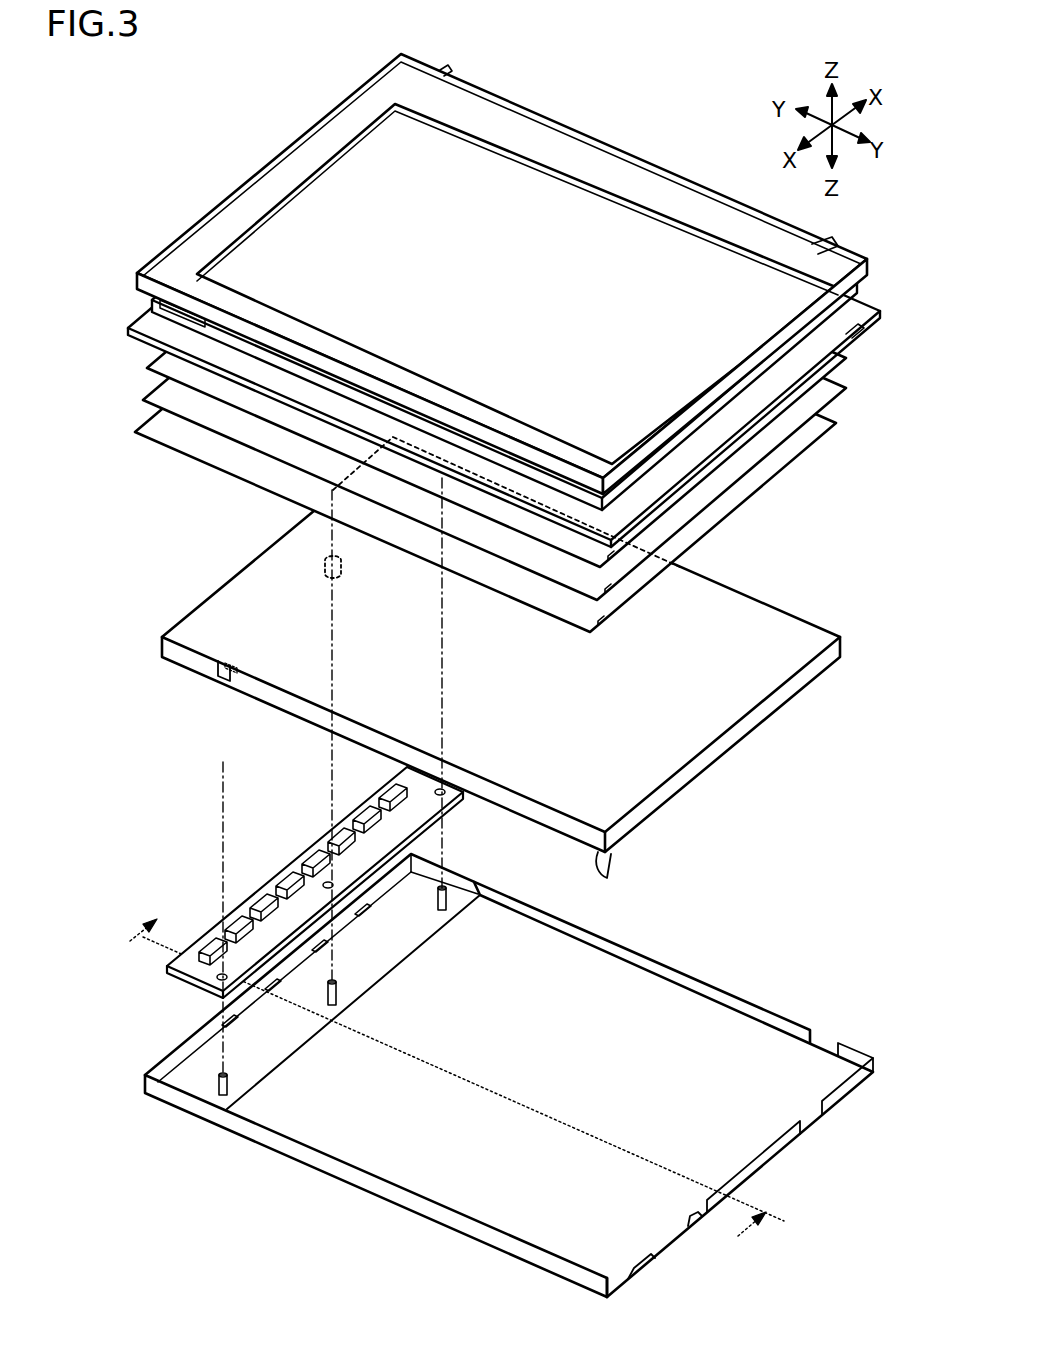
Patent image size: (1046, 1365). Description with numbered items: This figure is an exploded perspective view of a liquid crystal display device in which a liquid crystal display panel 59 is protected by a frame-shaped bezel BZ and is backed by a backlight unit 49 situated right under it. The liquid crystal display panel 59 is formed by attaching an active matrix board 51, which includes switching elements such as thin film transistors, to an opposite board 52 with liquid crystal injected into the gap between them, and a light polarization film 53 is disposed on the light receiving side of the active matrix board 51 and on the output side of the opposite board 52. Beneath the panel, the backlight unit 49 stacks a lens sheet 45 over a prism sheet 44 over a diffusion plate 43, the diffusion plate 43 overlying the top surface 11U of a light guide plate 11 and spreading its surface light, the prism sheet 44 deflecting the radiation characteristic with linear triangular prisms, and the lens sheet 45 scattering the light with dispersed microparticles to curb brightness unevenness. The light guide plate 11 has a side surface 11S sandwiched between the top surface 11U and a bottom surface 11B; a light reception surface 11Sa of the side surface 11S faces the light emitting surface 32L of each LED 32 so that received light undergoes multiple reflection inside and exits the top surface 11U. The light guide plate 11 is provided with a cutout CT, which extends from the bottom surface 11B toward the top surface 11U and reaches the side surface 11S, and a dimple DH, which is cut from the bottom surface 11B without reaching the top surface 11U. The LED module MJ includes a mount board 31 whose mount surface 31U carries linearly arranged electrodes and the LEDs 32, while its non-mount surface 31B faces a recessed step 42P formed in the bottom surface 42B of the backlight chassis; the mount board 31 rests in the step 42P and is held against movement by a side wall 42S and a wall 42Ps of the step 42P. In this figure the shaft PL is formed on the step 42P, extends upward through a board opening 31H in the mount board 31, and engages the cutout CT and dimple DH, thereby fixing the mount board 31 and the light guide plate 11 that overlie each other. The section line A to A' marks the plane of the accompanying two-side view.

The bezel BZ is at (136, 273).
The liquid crystal display panel 59 is at (460, 315).
The opposite board 52 is at (150, 300).
The active matrix board 51 is at (152, 311).
The light polarization film 53 is at (142, 341).
The lens sheet 45 is at (496, 363).
The prism sheet 44 is at (494, 394).
The diffusion plate 43 is at (485, 427).
The light guide plate 11 is at (476, 672).
The light reception surface 11Sa is at (176, 626).
The top surface 11U is at (512, 656).
The side surface 11S is at (804, 620).
The bottom surface 11B is at (783, 720).
The cutout CT is at (440, 474).
The dimple DH is at (253, 558).
The backlight unit 49 is at (92, 272).
The LED module MJ is at (333, 889).
The mount board 31 is at (333, 889).
The mount surface 31U is at (398, 775).
The non-mount surface 31B is at (380, 796).
The board opening 31H is at (334, 886).
The LED 32 is at (303, 874).
The light emitting surface 32L is at (322, 872).
The shaft PL is at (448, 886).
The step 42P is at (319, 981).
The wall of the step 42Ps is at (300, 1084).
The bottom surface 42B is at (509, 1075).
The side wall 42S is at (489, 1075).
The section line A is at (457, 1053).
The section line A' is at (768, 1214).